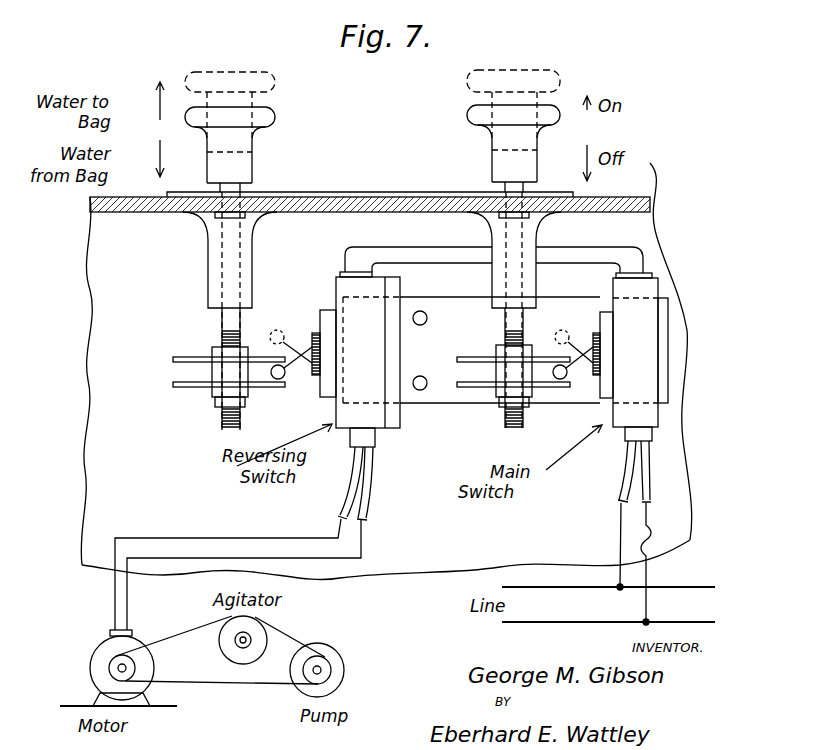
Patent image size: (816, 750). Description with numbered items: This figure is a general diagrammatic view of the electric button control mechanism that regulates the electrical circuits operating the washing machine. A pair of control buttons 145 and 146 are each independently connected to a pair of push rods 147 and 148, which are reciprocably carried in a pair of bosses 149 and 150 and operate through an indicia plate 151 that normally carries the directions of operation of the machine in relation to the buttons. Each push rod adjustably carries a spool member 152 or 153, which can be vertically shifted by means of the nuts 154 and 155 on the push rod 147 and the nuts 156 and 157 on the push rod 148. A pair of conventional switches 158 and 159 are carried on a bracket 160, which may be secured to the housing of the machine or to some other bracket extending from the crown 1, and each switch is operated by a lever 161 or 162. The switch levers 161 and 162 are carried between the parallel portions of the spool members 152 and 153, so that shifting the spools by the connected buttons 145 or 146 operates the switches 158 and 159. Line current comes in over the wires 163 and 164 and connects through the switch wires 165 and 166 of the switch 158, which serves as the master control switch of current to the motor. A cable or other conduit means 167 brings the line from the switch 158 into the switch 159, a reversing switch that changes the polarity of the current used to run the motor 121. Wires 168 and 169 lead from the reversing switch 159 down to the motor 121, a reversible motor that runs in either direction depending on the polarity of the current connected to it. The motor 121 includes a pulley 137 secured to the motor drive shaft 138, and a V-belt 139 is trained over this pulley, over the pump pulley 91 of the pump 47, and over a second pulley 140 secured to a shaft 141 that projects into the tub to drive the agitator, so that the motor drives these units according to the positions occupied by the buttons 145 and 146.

The crown 1 is at (398, 191).
The pump 47 is at (356, 662).
The pump pulley 91 is at (322, 672).
The motor 121 is at (105, 648).
The pulley 137 is at (108, 664).
The motor drive shaft 138 is at (128, 670).
The V-belt 139 is at (214, 686).
The second pulley 140 is at (258, 632).
The shaft 141 is at (240, 638).
The control button 145 is at (550, 110).
The control button 146 is at (278, 116).
The push rod 147 is at (512, 185).
The push rod 148 is at (238, 186).
The boss 149 is at (530, 228).
The boss 150 is at (212, 252).
The indicia plate 151 is at (302, 192).
The spool member 152 is at (545, 388).
The spool member 153 is at (185, 388).
The nut 154 is at (498, 348).
The nut 155 is at (497, 405).
The nut 156 is at (214, 347).
The nut 157 is at (246, 400).
The switch 158 is at (645, 315).
The switch 159 is at (340, 285).
The bracket 160 is at (440, 357).
The lever 161 is at (584, 352).
The lever 162 is at (298, 352).
The wire 163 is at (700, 620).
The wire 164 is at (688, 586).
The switch wire 165 is at (627, 470).
The switch wire 166 is at (640, 487).
The cable 167 is at (405, 249).
The wire 168 is at (356, 480).
The wire 169 is at (368, 497).